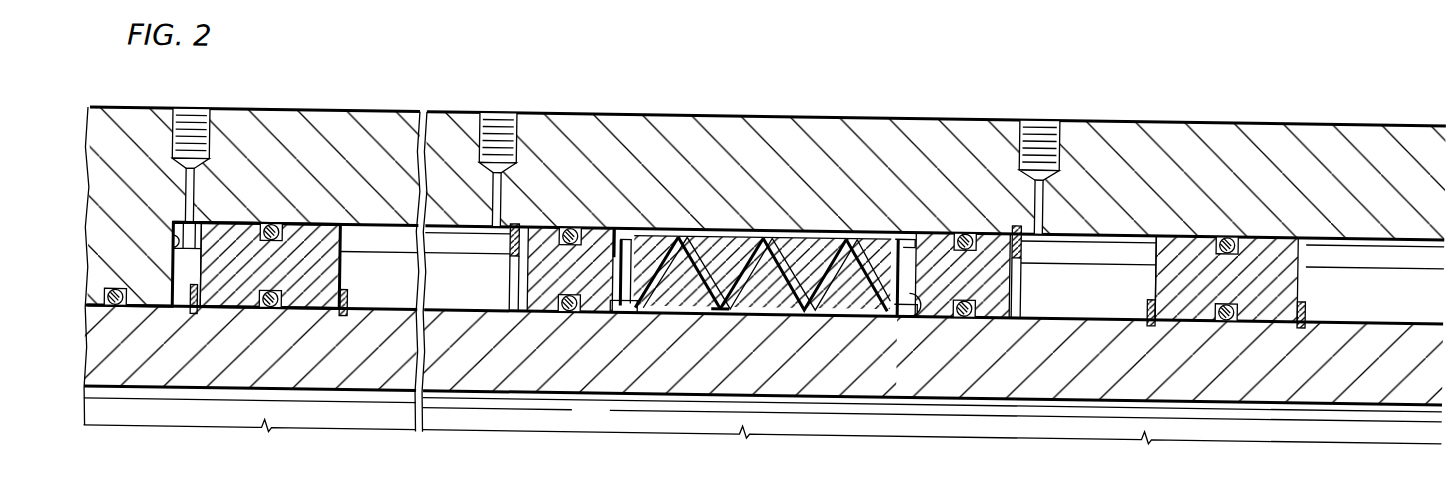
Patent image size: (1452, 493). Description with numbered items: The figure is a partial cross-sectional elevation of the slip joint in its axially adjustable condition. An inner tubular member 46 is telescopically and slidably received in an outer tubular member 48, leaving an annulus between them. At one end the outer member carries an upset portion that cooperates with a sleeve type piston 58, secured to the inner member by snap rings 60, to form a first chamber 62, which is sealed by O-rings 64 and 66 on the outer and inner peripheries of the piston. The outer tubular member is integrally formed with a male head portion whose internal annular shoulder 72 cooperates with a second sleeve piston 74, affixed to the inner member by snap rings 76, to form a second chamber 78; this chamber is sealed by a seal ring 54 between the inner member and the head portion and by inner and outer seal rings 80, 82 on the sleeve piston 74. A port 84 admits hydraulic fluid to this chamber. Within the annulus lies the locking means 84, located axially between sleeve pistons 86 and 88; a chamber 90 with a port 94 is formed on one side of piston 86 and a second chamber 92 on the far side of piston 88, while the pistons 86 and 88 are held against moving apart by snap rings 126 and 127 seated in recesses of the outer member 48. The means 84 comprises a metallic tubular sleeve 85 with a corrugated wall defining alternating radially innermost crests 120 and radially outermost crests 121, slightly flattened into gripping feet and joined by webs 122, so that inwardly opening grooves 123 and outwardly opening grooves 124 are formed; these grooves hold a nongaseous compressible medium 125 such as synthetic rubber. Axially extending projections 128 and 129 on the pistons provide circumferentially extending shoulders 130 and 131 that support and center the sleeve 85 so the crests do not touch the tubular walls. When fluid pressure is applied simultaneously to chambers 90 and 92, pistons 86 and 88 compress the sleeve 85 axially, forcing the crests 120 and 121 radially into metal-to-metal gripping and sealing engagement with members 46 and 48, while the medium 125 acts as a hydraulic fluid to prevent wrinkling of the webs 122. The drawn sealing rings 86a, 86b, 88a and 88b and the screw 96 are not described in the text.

The inner tubular member 46 is at (232, 362).
The outer tubular member 48 is at (1330, 140).
The seal ring 54 is at (118, 308).
The sleeve type piston 58 is at (1200, 300).
The snap rings 60 is at (1153, 313).
The first chamber 62 is at (1410, 306).
The O-ring 64 is at (1229, 222).
The O-ring 66 is at (1229, 308).
The internal annular shoulder 72 is at (175, 235).
The second sleeve piston 74 is at (315, 238).
The snap rings 76 is at (197, 310).
The second chamber 78 is at (192, 232).
The inner seal ring 80 is at (275, 308).
The outer seal ring 82 is at (273, 220).
The means for fixing the members (bellows seal) 84 is at (190, 111).
The tubular sleeve 85 is at (630, 308).
The sleeve piston 86 is at (532, 308).
The O-ring 86a is at (574, 308).
The O-ring 86b is at (573, 223).
The sleeve piston 88 is at (945, 308).
The O-ring 88a is at (968, 308).
The O-ring 88b is at (967, 222).
The chamber 90 is at (390, 244).
The second chamber 92 is at (1095, 245).
The port 94 is at (497, 112).
The set screw 96 is at (1042, 112).
The radially innermost crests 120 is at (812, 306).
The radially outermost crests 121 is at (685, 225).
The web 122 is at (684, 307).
The radially inwardly opening grooves 123 is at (737, 240).
The radially outwardly opening grooves 124 is at (735, 306).
The nongaseous compressible medium 125 is at (852, 240).
The snap ring 126 is at (516, 238).
The snap ring 127 is at (1017, 222).
The axially extending projection 128 is at (932, 415).
The axially extending projection 129 is at (925, 308).
The circumferentially extending shoulder 130 is at (616, 228).
The circumferentially extending shoulder 131 is at (898, 226).